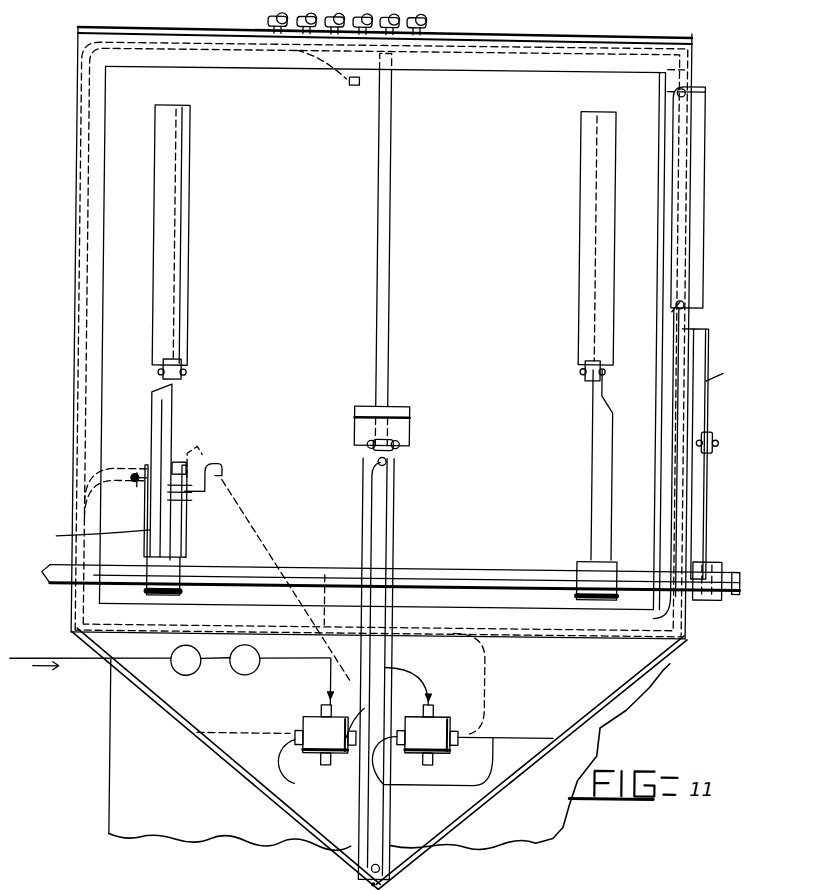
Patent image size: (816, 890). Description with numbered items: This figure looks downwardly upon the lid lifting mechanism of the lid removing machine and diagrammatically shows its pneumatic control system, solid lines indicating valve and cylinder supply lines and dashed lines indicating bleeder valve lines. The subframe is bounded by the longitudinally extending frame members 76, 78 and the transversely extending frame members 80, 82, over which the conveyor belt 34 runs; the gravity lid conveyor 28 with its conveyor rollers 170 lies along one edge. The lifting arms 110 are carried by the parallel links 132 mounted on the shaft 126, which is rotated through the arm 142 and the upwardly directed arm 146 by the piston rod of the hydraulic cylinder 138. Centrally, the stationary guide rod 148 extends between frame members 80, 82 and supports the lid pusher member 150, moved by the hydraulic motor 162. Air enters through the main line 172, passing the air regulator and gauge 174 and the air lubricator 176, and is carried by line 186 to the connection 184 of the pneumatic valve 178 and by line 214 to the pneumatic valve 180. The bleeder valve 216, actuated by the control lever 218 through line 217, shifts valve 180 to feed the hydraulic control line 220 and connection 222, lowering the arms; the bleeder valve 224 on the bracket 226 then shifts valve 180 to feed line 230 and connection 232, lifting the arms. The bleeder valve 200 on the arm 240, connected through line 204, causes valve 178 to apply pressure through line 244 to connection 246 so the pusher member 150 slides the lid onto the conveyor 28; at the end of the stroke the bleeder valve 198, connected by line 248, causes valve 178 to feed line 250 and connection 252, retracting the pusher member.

The gravity lid conveyor 28 is at (301, 13).
The conveyor rollers 170 is at (424, 17).
The transversely extending frame member 82 is at (78, 52).
The line 248 is at (231, 47).
The bleeder valve 198 is at (356, 82).
The longitudinally extending frame member 76 is at (677, 78).
The connection 222 is at (694, 88).
The longitudinally extending frame member 78 is at (80, 206).
The conveyor belt 34 is at (298, 246).
The lifting arms 110 is at (170, 319).
The hydraulic cylinder 138 is at (697, 228).
The connection 232 is at (688, 297).
The arm 142 is at (714, 380).
The upwardly directed arm 146 is at (717, 492).
The stationary guide rod 148 is at (384, 368).
The lid pusher member 150 is at (416, 429).
The parallel links 132 is at (172, 414).
The bleeder valve 200 is at (186, 460).
The bleeder valve 224 is at (155, 465).
The control lever 218 is at (210, 446).
The connection 246 is at (438, 875).
The connection 252 is at (393, 461).
The hydraulic motor 162 is at (399, 509).
The bleeder valve 216 is at (137, 488).
The bracket 226 is at (84, 530).
The arm 240 is at (196, 525).
The line 204 is at (286, 580).
The line 250 is at (369, 547).
The line 217 is at (332, 587).
The shaft 126 is at (459, 574).
The main line 172 is at (76, 662).
The air regulator and gauge 174 is at (193, 674).
The air lubricator 176 is at (252, 673).
The line 186 is at (330, 676).
The connection 184 is at (328, 718).
The pneumatic valve 178 is at (335, 740).
The line 244 is at (271, 775).
The line 214 is at (426, 661).
The hydraulic control line 220 is at (430, 781).
The line 230 is at (507, 729).
The pneumatic valve 180 is at (435, 738).
The transversely extending frame member 80 is at (630, 617).